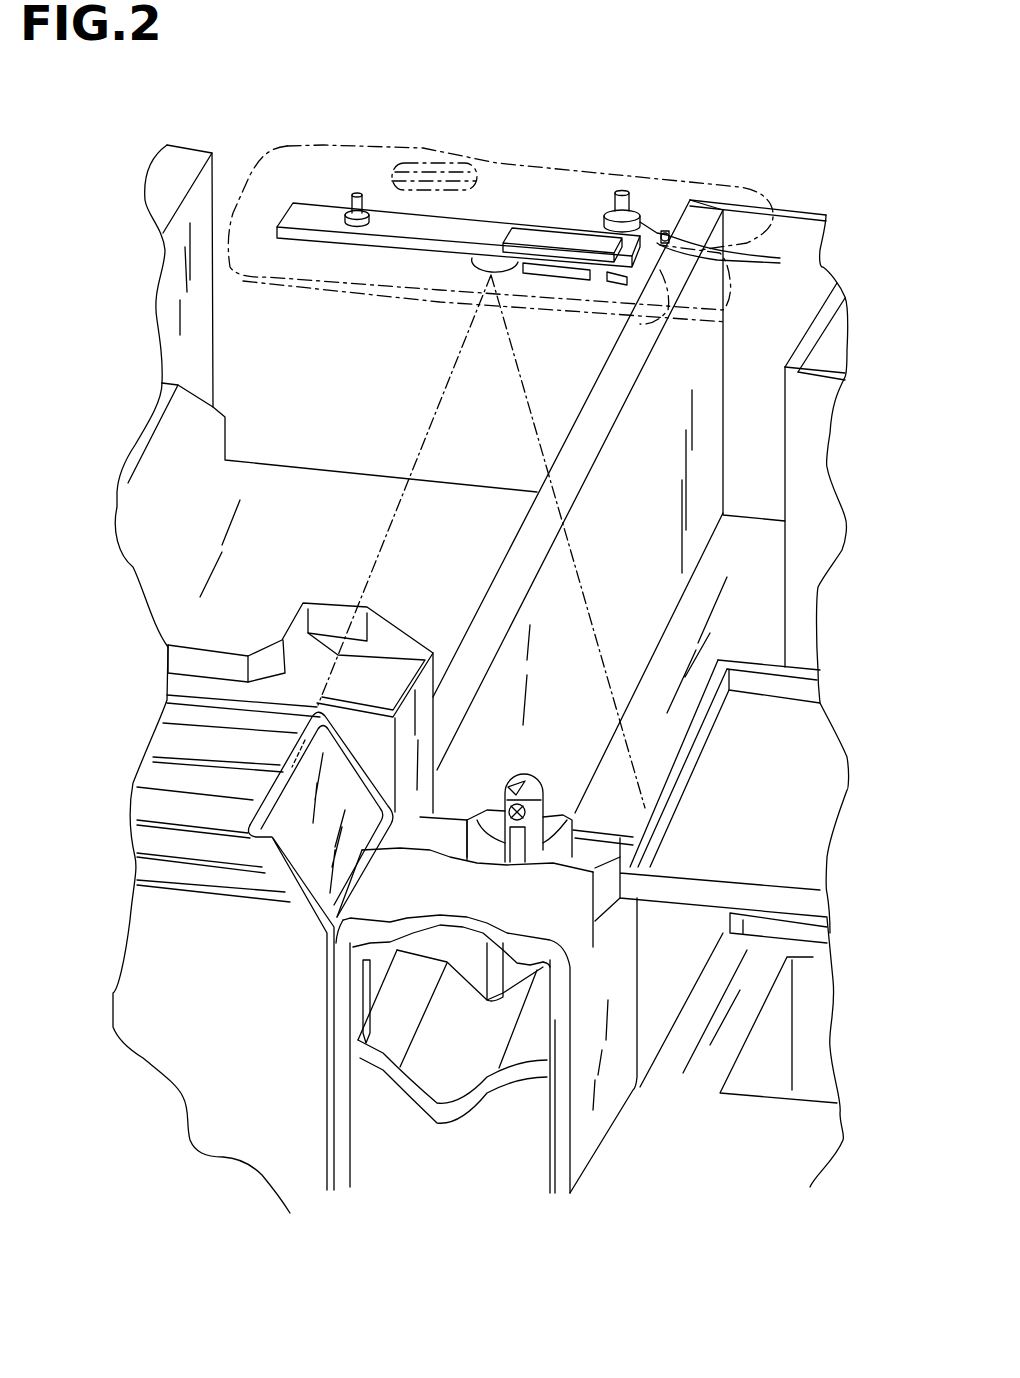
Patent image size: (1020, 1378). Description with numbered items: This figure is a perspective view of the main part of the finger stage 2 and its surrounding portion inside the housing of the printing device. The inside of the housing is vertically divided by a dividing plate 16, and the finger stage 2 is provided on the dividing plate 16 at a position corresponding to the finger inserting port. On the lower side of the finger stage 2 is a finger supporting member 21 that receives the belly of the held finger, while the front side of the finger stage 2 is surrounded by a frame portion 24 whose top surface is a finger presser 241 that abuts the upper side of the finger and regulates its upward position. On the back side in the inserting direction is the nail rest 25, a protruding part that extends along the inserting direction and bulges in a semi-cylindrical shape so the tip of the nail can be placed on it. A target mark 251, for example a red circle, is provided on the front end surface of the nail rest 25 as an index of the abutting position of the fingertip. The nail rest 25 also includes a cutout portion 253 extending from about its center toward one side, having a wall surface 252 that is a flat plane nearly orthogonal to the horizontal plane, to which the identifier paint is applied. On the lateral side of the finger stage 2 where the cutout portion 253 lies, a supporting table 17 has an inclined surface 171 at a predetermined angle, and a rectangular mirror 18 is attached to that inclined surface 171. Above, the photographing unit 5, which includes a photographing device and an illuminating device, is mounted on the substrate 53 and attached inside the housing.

The finger stage 2 is at (552, 1065).
The photographing unit 5 is at (490, 262).
The dividing plate 16 is at (742, 1143).
The supporting table 17 is at (325, 679).
The mirror 18 is at (293, 829).
The finger supporting member 21 is at (427, 1145).
The frame portion 24 is at (606, 1149).
The nail rest 25 is at (594, 850).
The substrate 53 is at (543, 173).
The inclined surface 171 is at (297, 790).
The finger presser 241 is at (555, 905).
The target mark 251 is at (527, 812).
The wall surface 252 is at (530, 781).
The cutout portion 253 is at (512, 781).